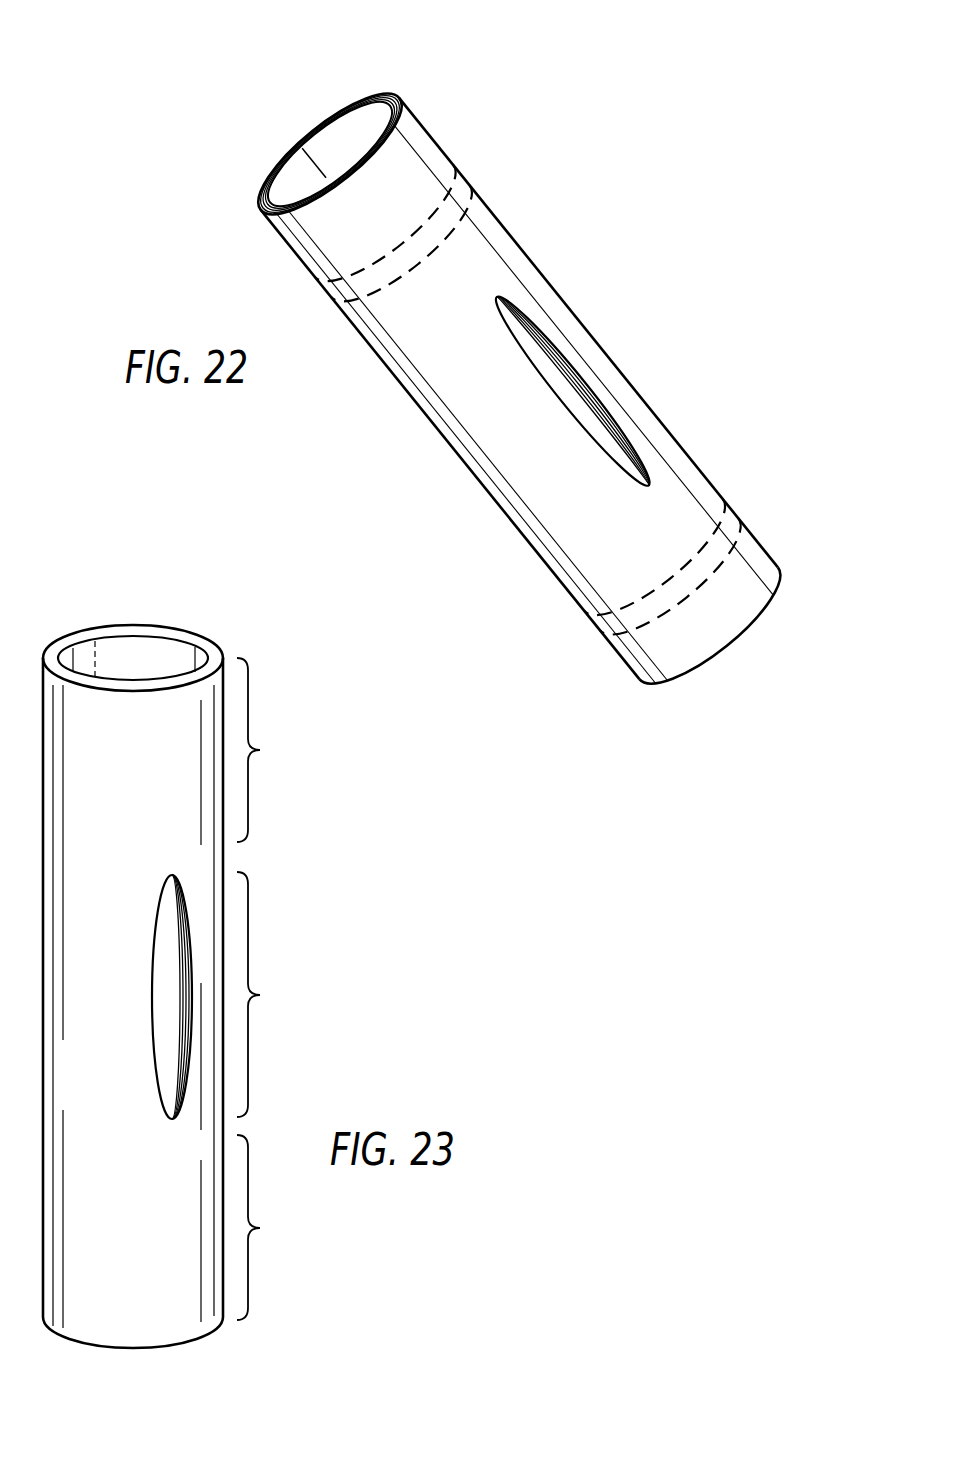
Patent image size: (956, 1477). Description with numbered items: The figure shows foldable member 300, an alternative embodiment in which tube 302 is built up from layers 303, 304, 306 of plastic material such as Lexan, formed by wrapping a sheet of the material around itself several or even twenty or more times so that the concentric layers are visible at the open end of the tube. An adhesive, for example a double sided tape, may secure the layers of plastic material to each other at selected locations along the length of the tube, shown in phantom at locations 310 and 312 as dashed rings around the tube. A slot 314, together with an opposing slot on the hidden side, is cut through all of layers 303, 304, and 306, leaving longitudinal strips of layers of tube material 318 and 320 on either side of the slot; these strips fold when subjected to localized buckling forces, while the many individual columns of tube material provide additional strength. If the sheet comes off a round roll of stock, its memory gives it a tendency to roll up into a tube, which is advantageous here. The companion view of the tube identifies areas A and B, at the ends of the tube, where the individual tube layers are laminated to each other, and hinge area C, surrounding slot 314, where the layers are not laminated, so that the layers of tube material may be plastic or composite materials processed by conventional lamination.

In FIG. 22, the foldable member 300 is at (526, 366).
In FIG. 22, the tube 302 is at (745, 583).
In FIG. 22, the layer 303 is at (400, 130).
In FIG. 22, the layer 304 is at (385, 102).
In FIG. 22, the layer 306 is at (370, 142).
In FIG. 22, the location 310 is at (327, 290).
In FIG. 22, the location 312 is at (610, 627).
In FIG. 22, the slot 314 is at (563, 388).
In FIG. 22, the longitudinal strip of layers of tube material 318 is at (443, 377).
In FIG. 22, the longitudinal strip of layers of tube material 320 is at (530, 300).
In FIG. 23, the area A is at (260, 750).
In FIG. 23, the area B is at (261, 1227).
In FIG. 23, the hinge area C is at (261, 994).